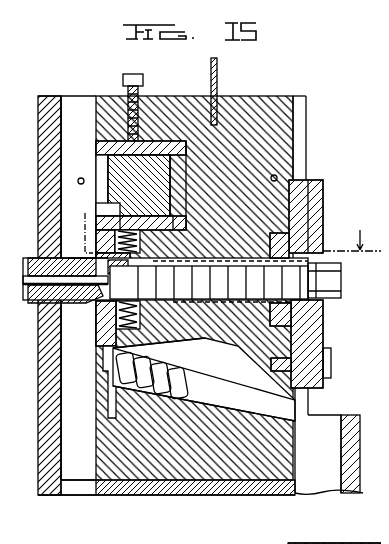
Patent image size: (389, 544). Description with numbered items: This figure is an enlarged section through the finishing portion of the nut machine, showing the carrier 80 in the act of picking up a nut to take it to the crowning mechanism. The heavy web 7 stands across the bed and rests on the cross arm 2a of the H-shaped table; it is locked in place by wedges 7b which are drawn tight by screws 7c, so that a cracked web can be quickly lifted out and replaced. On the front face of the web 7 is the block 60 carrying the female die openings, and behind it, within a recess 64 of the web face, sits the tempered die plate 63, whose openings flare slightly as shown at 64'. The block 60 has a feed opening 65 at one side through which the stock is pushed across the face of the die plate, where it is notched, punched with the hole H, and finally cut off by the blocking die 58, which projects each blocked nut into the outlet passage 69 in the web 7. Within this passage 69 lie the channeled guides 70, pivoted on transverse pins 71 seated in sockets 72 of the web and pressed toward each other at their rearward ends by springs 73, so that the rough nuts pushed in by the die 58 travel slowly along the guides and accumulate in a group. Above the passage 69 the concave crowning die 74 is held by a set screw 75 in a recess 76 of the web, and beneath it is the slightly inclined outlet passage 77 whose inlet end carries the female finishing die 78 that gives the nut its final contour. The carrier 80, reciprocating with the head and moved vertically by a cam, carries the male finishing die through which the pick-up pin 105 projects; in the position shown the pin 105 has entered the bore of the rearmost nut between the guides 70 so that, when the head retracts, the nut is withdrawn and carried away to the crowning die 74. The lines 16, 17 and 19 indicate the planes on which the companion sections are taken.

The web 7 is at (262, 102).
The wedges 7b is at (62, 100).
The screws 7c is at (70, 171).
The carrier 80 is at (38, 89).
The springs 73 is at (106, 188).
The section line 16— 16 is at (132, 66).
The crowning die 74 is at (142, 158).
The set screw 75 is at (117, 88).
The recess 76 is at (211, 96).
The channeled guides 70 is at (291, 120).
The recess 64 is at (311, 155).
The block 60 is at (301, 184).
The die plate 63 is at (317, 215).
The transverse pins 71 is at (304, 241).
The section line 17— 17 is at (224, 233).
The blocking die 58 is at (320, 272).
The feed opening 65 is at (313, 302).
The flared openings 64' is at (317, 337).
The outlet passage 69 is at (325, 360).
The pick-up pin 105 is at (73, 294).
The hole H is at (80, 326).
The section line 19— 19 is at (72, 250).
The outlet passage 77 is at (278, 404).
The finishing die 78 is at (89, 412).
The cross arm 2a is at (170, 489).
The sockets 72 is at (334, 330).